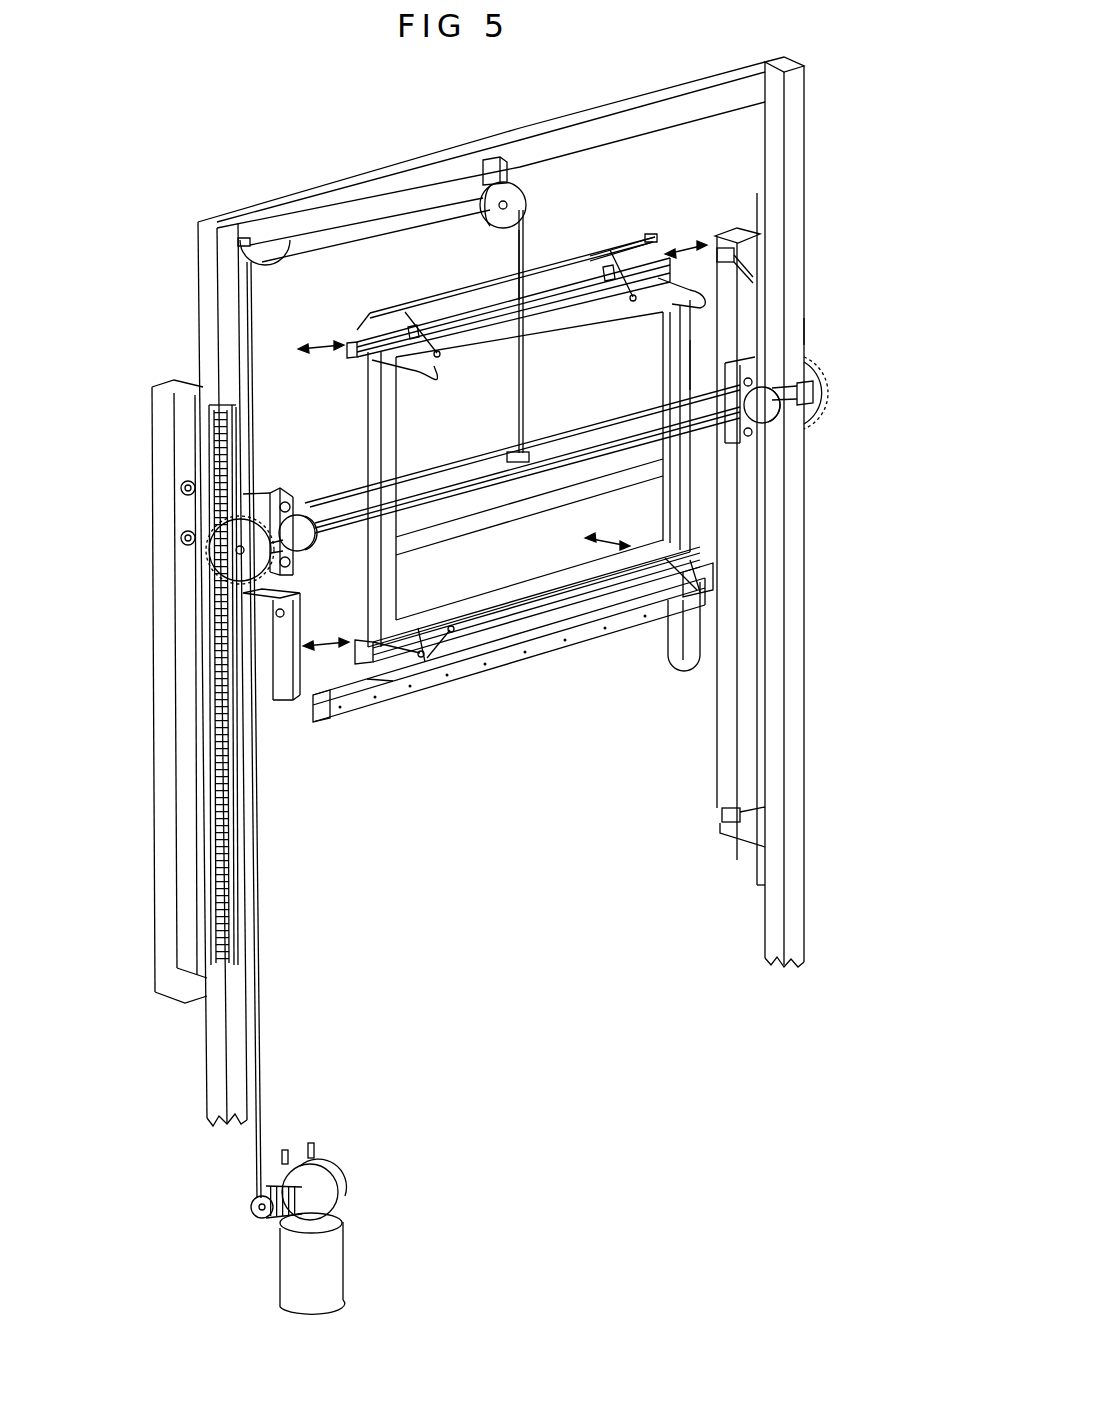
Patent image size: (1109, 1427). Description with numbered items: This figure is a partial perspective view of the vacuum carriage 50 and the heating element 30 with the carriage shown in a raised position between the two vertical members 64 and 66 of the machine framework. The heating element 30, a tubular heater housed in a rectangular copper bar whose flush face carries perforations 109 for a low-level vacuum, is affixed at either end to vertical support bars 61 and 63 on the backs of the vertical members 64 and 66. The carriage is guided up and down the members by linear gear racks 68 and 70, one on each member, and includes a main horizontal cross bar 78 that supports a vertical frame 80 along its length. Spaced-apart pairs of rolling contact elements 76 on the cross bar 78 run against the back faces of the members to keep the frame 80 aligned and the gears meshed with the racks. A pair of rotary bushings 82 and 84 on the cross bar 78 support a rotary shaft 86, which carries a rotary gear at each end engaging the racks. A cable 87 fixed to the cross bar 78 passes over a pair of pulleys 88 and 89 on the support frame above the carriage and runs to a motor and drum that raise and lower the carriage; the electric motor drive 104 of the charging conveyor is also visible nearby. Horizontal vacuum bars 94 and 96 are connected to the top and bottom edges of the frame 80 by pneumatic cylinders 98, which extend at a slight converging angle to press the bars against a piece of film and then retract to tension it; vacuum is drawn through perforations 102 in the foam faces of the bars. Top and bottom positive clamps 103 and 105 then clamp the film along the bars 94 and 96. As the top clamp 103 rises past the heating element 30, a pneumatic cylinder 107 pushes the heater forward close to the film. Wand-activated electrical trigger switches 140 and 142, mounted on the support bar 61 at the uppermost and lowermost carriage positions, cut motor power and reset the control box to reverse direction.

The heating element 30 is at (513, 653).
The vacuum carriage 50 is at (700, 363).
The vertical support bar 61 is at (740, 692).
The vertical support bar 63 is at (170, 962).
The vertical member 64 is at (790, 145).
The vertical member 66 is at (218, 1058).
The linear gear rack 68 is at (810, 332).
The linear gear rack 70 is at (213, 430).
The rolling contact elements 76 is at (181, 488).
The main horizontal cross bar 78 is at (668, 418).
The vertical frame 80 is at (377, 473).
The rotary bushing 82 is at (757, 412).
The rotary bushing 84 is at (191, 574).
The rotary shaft 86 is at (752, 434).
The cable 87 is at (715, 175).
The pulley 88 is at (388, 183).
The pulley 89 is at (201, 206).
The horizontal vacuum bar 94 is at (386, 297).
The horizontal vacuum bar 96 is at (382, 638).
The pneumatic cylinders 98 is at (860, 548).
The perforations 102 is at (373, 258).
The top positive clamp 103 is at (756, 218).
The electric motor drive 104 is at (300, 1255).
The bottom positive clamp 105 is at (685, 597).
The pneumatic cylinder 107 is at (696, 640).
The perforations 109 is at (189, 730).
The electrical trigger switch 140 is at (736, 255).
The electrical trigger switch 142 is at (741, 819).